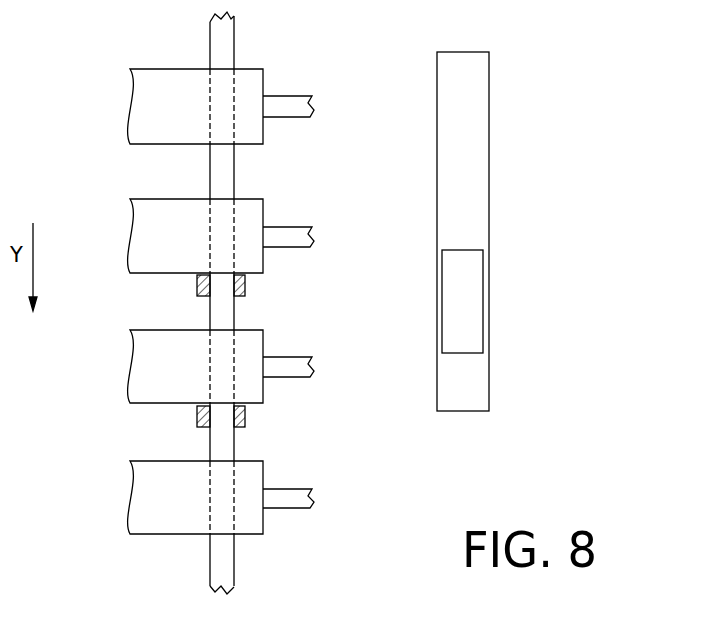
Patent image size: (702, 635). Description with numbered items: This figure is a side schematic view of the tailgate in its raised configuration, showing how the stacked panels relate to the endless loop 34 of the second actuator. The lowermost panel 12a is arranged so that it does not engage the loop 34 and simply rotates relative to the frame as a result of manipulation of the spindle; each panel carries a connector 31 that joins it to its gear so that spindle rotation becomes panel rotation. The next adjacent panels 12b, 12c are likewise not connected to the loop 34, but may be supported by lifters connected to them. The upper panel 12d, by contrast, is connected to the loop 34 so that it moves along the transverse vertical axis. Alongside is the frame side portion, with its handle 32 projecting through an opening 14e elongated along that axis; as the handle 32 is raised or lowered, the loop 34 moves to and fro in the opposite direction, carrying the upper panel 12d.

The lowermost panel 12a is at (162, 461).
The adjacent panel 12b is at (162, 330).
The adjacent panel 12c is at (162, 199).
The upper panel 12d is at (162, 69).
The connector 31 is at (288, 97).
The handle 32 is at (478, 283).
The endless loop 34 is at (224, 565).
The opening 14e is at (489, 108).